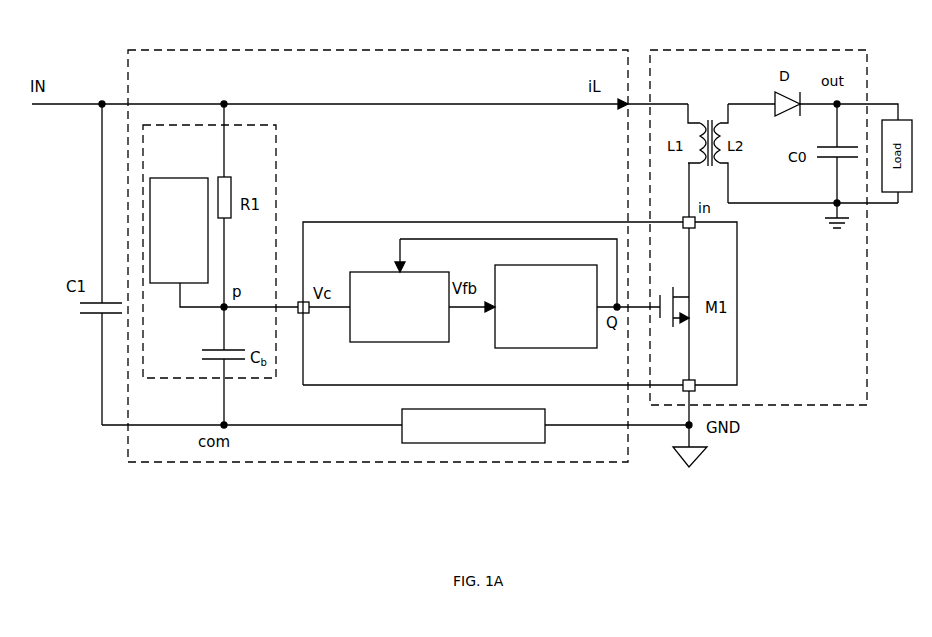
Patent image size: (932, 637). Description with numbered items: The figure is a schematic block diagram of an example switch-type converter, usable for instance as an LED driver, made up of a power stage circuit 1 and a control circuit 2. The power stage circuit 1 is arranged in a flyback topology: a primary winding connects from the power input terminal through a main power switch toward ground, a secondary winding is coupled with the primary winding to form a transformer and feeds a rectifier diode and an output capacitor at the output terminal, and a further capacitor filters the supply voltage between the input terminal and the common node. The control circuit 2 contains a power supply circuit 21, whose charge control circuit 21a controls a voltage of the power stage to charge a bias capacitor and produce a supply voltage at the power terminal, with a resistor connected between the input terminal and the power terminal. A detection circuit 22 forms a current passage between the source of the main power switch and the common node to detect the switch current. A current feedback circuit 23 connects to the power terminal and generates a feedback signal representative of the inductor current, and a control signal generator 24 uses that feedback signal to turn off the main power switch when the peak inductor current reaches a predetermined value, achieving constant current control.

The power stage circuit 1 is at (793, 52).
The control circuit 2 is at (543, 52).
The power supply circuit 21 is at (278, 138).
The charge control circuit 21a is at (179, 230).
The detection circuit 22 is at (473, 426).
The current feedback circuit 23 is at (399, 307).
The control signal generator 24 is at (546, 306).